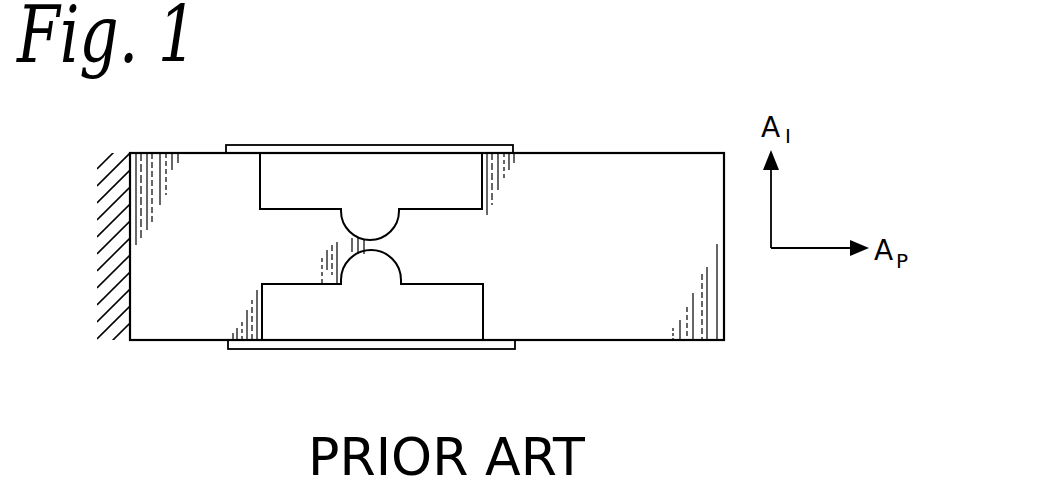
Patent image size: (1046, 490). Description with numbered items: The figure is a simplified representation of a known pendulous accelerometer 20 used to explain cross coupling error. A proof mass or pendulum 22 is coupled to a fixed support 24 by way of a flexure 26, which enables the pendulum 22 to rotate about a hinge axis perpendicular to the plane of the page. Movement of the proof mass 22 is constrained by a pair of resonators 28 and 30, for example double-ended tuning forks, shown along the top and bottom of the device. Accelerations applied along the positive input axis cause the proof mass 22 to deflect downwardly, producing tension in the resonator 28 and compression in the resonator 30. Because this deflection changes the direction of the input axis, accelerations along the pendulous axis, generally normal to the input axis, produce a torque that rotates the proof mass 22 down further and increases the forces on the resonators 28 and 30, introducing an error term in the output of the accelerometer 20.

The pendulous accelerometer 20 is at (561, 125).
The proof mass 22 is at (598, 320).
The fixed support 24 is at (182, 322).
The flexure 26 is at (381, 217).
The resonator 28 is at (318, 147).
The resonator 30 is at (292, 346).